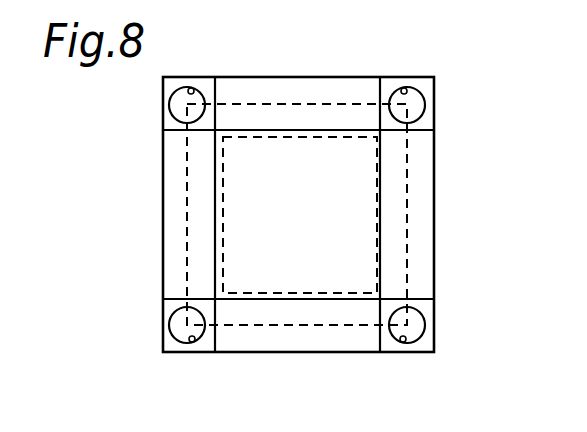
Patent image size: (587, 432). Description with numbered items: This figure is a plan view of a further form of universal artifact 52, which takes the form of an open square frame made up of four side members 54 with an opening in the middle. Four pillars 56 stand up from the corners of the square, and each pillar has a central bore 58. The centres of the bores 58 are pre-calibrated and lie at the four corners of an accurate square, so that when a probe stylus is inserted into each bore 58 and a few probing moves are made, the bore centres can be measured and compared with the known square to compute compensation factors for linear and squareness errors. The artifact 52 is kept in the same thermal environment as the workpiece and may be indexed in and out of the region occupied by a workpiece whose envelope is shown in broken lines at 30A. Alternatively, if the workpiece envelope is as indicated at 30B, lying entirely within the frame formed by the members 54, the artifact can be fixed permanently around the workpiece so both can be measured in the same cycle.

The universal artifact 52 is at (141, 177).
The side members 54 is at (292, 92).
The pillars 56 is at (163, 111).
The central bore 58 is at (193, 89).
The workpiece envelope 30A is at (408, 237).
The workpiece envelope 30B is at (378, 200).